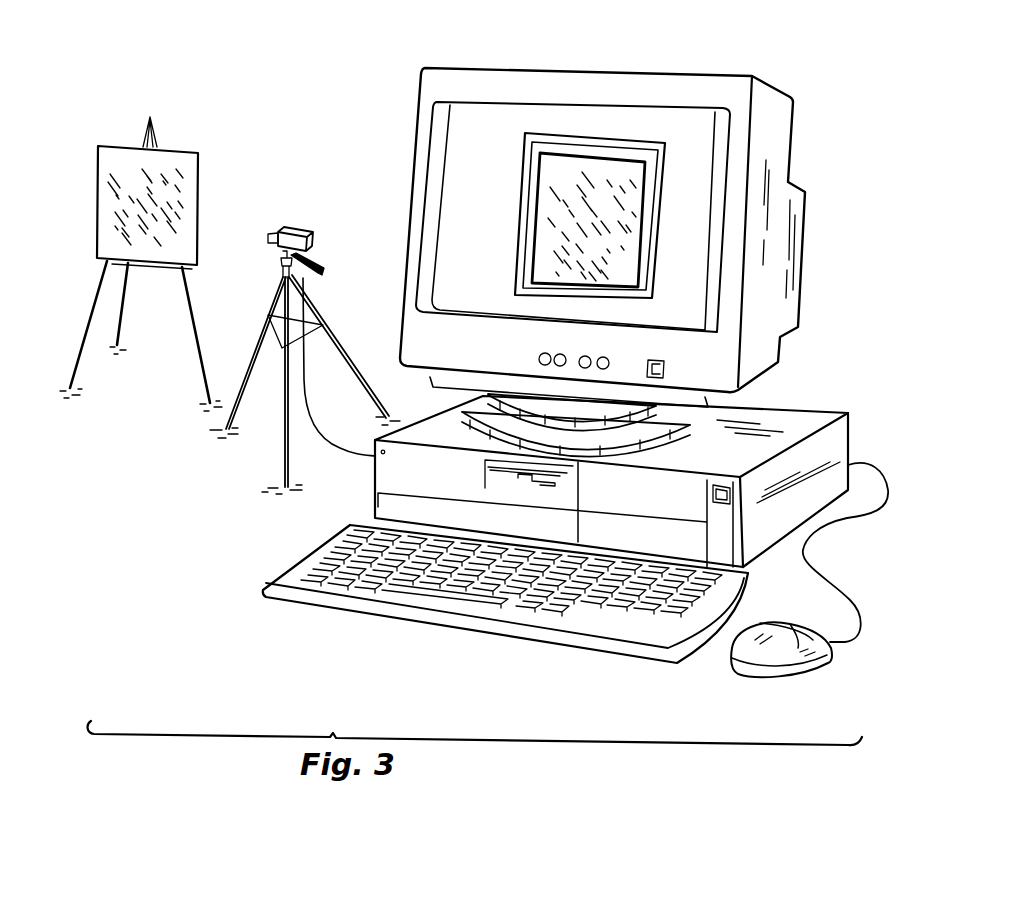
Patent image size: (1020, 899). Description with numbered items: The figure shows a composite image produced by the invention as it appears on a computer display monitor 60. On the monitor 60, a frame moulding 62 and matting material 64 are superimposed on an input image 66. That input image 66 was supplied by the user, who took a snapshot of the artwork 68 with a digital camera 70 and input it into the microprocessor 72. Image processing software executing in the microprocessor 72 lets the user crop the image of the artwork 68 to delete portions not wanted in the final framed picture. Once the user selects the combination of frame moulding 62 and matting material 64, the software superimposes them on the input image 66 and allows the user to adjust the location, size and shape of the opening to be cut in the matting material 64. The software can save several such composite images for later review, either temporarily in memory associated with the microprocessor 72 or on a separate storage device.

The computer display monitor 60 is at (777, 124).
The frame moulding 62 is at (607, 135).
The matting material 64 is at (642, 153).
The input image 66 is at (618, 278).
The artwork 68 is at (197, 152).
The digital camera 70 is at (302, 230).
The microprocessor 72 is at (840, 449).